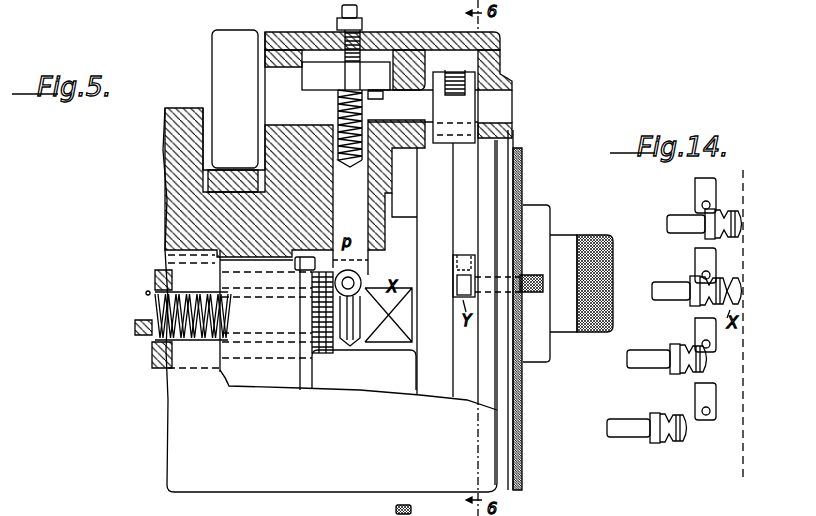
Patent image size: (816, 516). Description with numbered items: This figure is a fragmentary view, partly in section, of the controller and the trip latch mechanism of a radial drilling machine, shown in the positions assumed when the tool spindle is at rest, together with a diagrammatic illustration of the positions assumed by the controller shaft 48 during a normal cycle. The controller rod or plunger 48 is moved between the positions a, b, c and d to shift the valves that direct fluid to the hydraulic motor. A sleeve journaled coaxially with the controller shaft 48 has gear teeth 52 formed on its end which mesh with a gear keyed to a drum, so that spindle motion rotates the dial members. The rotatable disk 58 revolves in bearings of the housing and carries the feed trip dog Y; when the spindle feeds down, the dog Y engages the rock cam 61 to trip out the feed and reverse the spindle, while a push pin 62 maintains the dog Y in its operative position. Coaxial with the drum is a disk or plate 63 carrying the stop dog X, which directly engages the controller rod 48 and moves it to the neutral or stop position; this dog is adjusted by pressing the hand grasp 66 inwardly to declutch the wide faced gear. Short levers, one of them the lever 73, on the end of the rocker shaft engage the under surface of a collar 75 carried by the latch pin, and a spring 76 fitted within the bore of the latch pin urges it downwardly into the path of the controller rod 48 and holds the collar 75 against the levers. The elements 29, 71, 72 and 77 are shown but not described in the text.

In FIG. 5, the block 29 is at (235, 99).
In FIG. 5, the controller shaft 48 is at (147, 300).
In FIG. 14, the controller shaft 48 is at (662, 310).
In FIG. 5, the gear teeth 52 is at (325, 352).
In FIG. 5, the rotatable disk 58 is at (463, 270).
In FIG. 5, the rock cam 61 is at (470, 135).
In FIG. 5, the push pin 62 is at (466, 262).
In FIG. 5, the disk or plate 63 is at (427, 271).
In FIG. 5, the hand grasp 66 is at (595, 242).
In FIG. 5, the block 71 is at (454, 106).
In FIG. 5, the bar 72 is at (423, 243).
In FIG. 5, the short lever 73 is at (376, 98).
In FIG. 5, the collar 75 is at (346, 76).
In FIG. 5, the spring 76 is at (337, 108).
In FIG. 5, the plug 77 is at (153, 342).